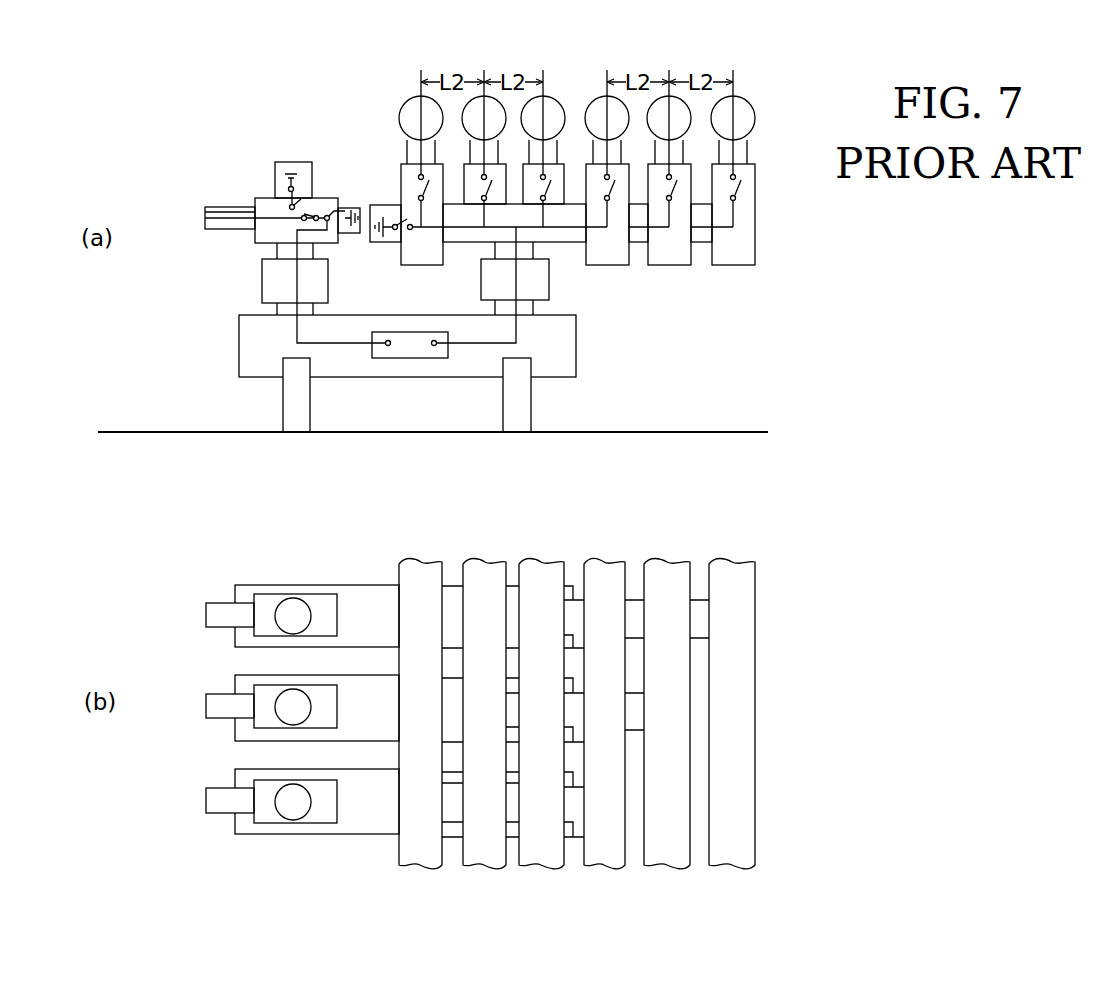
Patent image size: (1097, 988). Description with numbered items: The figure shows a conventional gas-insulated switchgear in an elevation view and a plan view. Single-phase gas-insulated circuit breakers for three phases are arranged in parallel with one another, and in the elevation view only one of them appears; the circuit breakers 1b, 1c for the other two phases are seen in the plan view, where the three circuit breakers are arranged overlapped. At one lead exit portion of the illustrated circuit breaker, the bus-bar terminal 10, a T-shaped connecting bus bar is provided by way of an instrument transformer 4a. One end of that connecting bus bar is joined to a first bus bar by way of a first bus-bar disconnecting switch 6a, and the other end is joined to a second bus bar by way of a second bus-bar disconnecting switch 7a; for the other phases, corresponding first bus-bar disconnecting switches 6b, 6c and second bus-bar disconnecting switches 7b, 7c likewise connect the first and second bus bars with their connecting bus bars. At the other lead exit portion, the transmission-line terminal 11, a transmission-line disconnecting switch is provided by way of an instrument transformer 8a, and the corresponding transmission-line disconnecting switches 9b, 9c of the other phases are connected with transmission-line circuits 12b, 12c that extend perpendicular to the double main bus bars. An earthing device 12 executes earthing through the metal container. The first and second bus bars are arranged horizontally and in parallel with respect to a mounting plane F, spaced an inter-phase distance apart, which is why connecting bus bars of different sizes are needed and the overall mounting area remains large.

The single-phase gas-insulated circuit breaker 1b is at (345, 742).
The single-phase gas-insulated circuit breaker 1c is at (320, 584).
The instrument transformer 4a is at (552, 288).
The first bus-bar disconnecting switch 6a is at (400, 175).
The first bus-bar disconnecting switch 6b is at (463, 185).
The first bus-bar disconnecting switch 6c is at (522, 185).
The second bus-bar disconnecting switch 7a is at (629, 185).
The second bus-bar disconnecting switch 7b is at (691, 185).
The second bus-bar disconnecting switch 7c is at (755, 163).
The instrument transformer 8a is at (330, 277).
The transmission-line disconnecting switch 9b is at (272, 730).
The transmission-line disconnecting switch 9c is at (275, 637).
The bus-bar terminal 10 is at (548, 316).
The transmission-line terminal 11 is at (275, 312).
The earthing device 12 is at (297, 184).
The transmission-line circuit 12b is at (218, 720).
The transmission-line circuit 12c is at (215, 628).
The mounting plane F is at (706, 431).